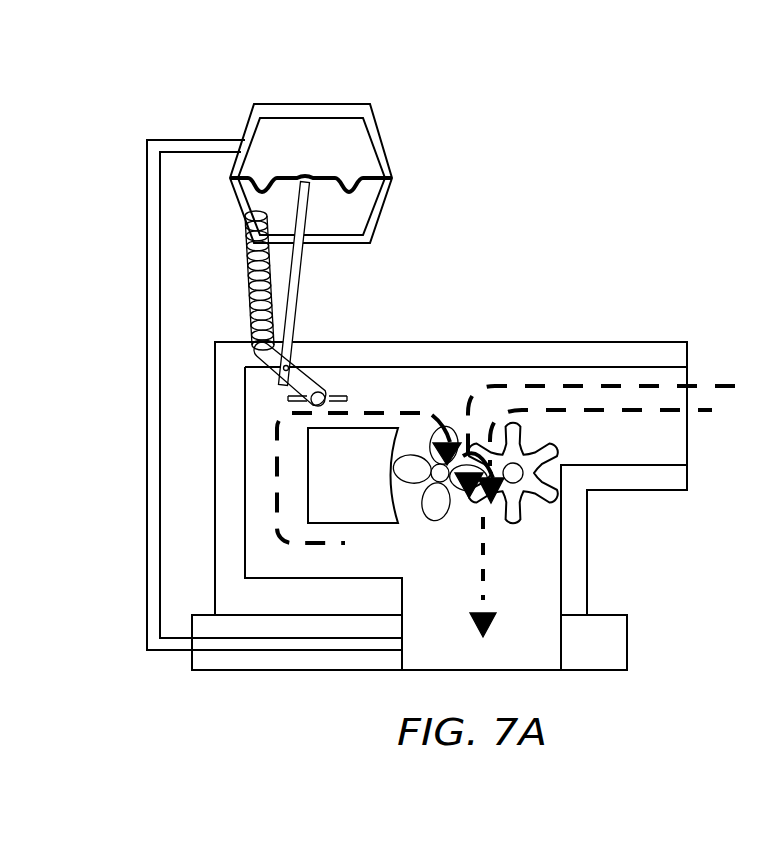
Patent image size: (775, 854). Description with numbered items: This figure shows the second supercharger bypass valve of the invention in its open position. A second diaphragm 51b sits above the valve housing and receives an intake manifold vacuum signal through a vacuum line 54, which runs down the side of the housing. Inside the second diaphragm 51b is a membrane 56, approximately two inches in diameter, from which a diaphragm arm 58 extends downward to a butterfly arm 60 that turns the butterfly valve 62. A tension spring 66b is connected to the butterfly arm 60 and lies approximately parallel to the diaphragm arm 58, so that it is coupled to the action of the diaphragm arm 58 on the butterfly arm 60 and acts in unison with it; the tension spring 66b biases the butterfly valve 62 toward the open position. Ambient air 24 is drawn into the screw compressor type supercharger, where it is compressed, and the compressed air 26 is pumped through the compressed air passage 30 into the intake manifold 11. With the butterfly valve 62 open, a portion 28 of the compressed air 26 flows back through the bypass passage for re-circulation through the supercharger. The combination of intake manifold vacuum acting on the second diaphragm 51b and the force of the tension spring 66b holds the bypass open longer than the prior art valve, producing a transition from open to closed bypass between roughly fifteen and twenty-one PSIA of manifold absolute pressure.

The intake manifold 11 is at (612, 650).
The ambient air 24 is at (683, 383).
The compressed air 26 is at (487, 532).
The portion of the compressed air 28 is at (275, 477).
The compressed air passage 30 is at (505, 584).
The second diaphragm 51b is at (252, 132).
The vacuum line 54 is at (178, 145).
The membrane 56 is at (352, 187).
The diaphragm arm 58 is at (302, 260).
The butterfly arm 60 is at (302, 387).
The butterfly valve 62 is at (338, 395).
The tension spring 66b is at (248, 288).